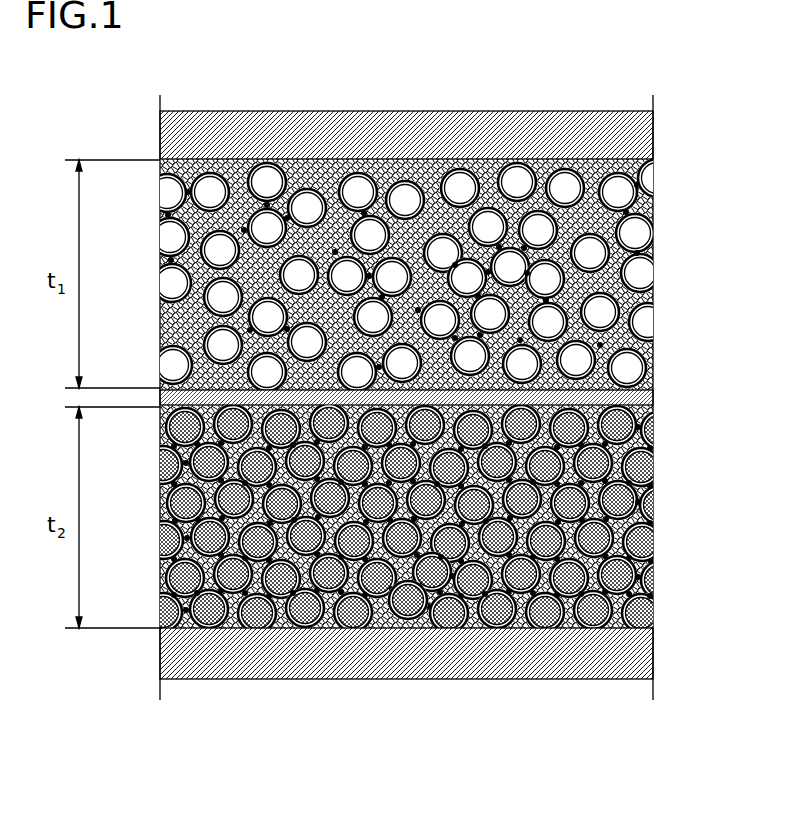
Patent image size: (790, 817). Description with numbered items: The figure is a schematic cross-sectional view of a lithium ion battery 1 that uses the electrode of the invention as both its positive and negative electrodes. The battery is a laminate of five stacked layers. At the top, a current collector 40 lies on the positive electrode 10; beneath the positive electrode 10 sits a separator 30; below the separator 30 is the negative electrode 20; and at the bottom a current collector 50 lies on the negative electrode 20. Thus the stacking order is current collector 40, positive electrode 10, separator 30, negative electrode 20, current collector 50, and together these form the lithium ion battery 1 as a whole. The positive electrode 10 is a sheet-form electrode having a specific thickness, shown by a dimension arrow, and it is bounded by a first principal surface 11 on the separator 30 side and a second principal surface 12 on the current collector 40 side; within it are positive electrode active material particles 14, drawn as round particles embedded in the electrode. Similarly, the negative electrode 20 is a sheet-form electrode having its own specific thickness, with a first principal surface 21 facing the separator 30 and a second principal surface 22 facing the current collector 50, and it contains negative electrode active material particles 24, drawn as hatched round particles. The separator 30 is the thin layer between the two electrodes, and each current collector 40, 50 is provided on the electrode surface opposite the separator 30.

The lithium ion battery 1 is at (704, 96).
The positive electrode 10 is at (411, 227).
The first principal surface 11 is at (630, 376).
The second principal surface 12 is at (648, 178).
The positive electrode active material particles 14 is at (268, 178).
The negative electrode 20 is at (410, 572).
The first principal surface 21 is at (643, 427).
The second principal surface 22 is at (653, 612).
The negative electrode active material particles 24 is at (408, 600).
The separator 30 is at (653, 397).
The current collector 40 is at (643, 131).
The current collector 50 is at (645, 658).